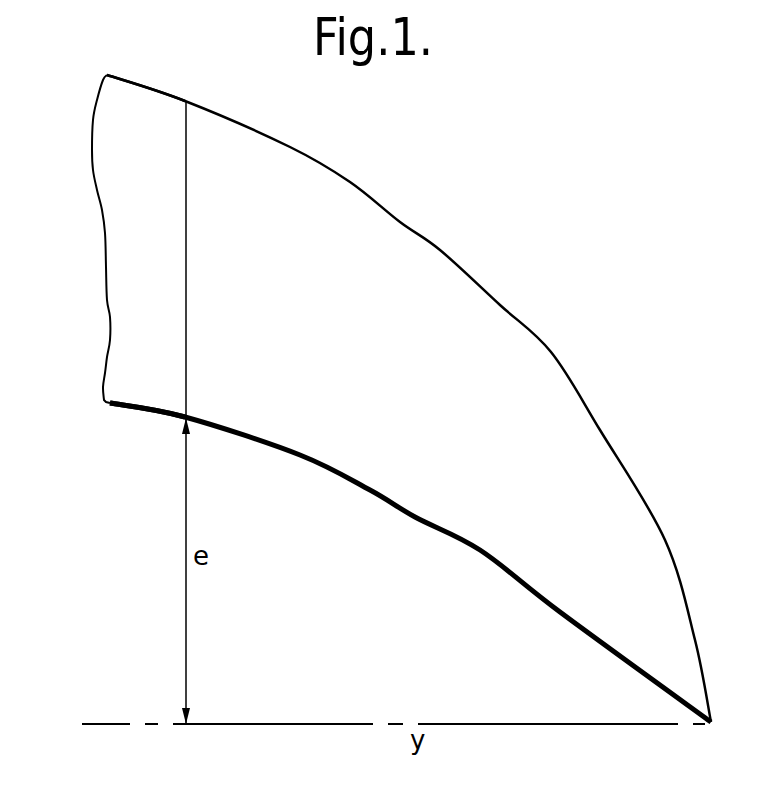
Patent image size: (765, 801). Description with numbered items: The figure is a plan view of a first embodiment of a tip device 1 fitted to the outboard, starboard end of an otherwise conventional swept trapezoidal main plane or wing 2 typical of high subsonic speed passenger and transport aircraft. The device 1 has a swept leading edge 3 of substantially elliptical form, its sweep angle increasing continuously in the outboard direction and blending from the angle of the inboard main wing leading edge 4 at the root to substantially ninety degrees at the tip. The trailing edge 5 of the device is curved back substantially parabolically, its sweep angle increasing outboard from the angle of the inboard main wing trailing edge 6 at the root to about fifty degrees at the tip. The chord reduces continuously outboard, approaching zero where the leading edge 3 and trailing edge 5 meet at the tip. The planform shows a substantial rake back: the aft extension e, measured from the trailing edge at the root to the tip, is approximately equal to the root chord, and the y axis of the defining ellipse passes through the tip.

The tip device 1 is at (482, 233).
The main plane (wing) 2 is at (74, 147).
The leading edge 3 is at (551, 352).
The main wing leading edge 4 is at (146, 88).
The trailing edge 5 is at (418, 507).
The main wing trailing edge 6 is at (135, 411).